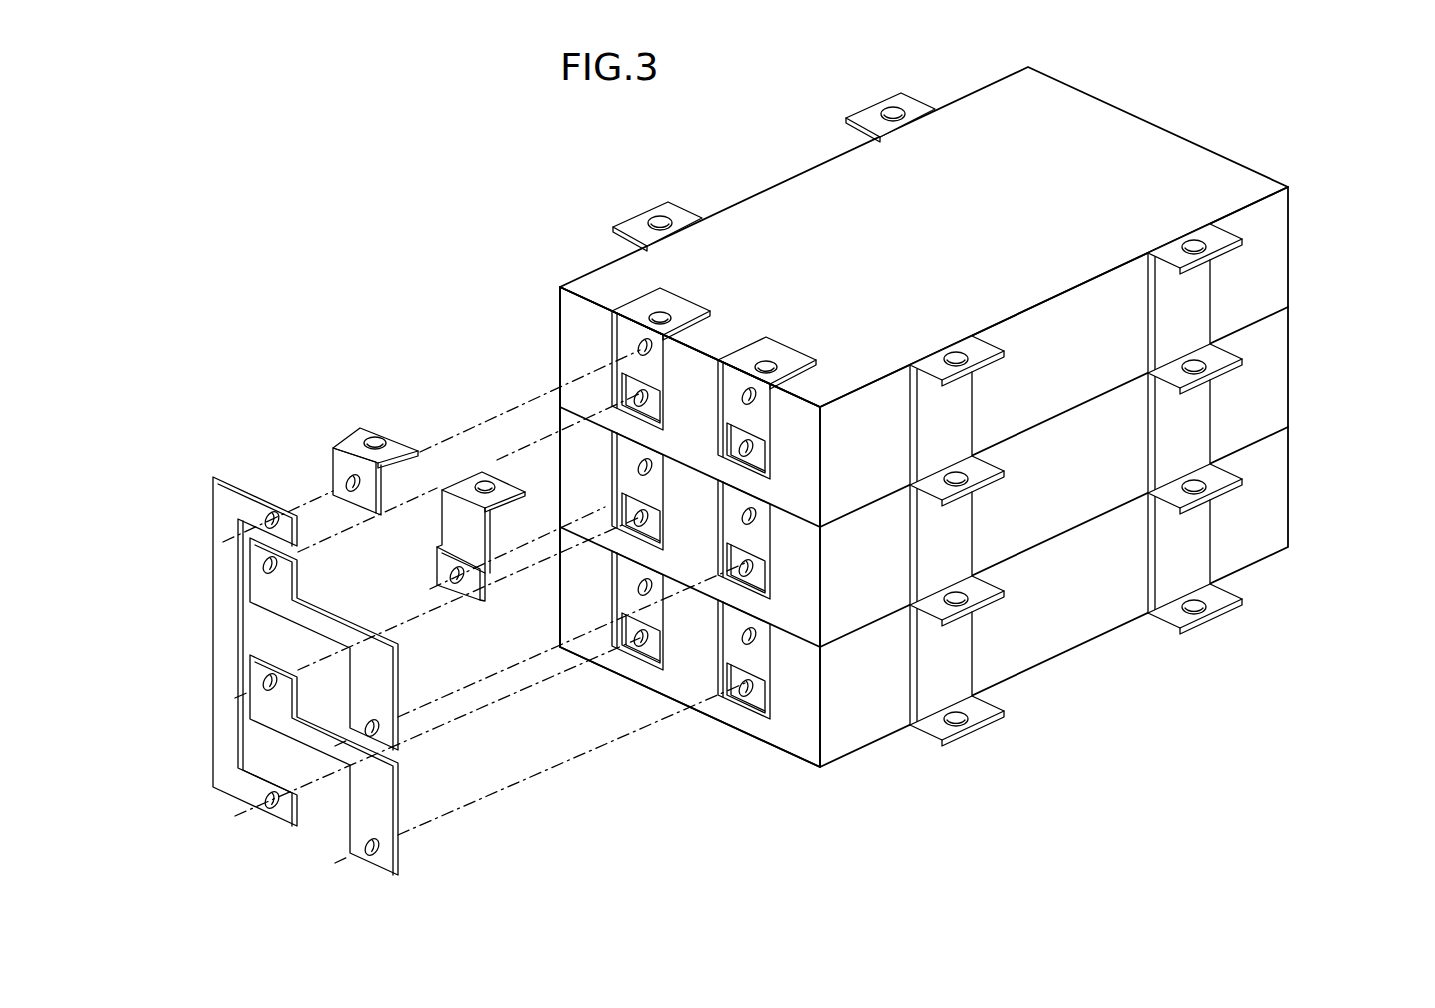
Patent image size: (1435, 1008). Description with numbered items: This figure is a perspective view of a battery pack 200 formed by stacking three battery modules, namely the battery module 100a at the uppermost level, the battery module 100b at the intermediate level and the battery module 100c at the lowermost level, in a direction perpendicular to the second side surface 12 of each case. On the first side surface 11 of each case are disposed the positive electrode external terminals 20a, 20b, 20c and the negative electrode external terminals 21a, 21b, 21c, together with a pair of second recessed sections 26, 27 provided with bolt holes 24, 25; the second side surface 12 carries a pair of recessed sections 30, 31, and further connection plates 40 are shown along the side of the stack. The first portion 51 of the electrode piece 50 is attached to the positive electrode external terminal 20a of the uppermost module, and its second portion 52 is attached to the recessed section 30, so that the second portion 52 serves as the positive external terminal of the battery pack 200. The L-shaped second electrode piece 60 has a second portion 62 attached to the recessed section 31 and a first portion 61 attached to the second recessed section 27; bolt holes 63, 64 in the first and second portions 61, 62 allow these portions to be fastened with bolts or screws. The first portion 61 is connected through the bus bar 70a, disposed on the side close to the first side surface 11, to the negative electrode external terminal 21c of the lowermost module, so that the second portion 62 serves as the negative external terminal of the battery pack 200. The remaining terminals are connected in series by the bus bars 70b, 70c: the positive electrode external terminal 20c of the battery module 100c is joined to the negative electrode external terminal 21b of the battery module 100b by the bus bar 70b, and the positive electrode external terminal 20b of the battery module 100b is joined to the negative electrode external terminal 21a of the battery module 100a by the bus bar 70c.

The battery pack 200 is at (944, 417).
The first side surface 11 is at (580, 350).
The second side surface 12 is at (605, 280).
The positive electrode external terminal 20a is at (771, 430).
The positive electrode external terminal 20b is at (757, 586).
The positive electrode external terminal 20c is at (757, 706).
The negative electrode external terminal 21a is at (667, 381).
The negative electrode external terminal 21b is at (652, 533).
The negative electrode external terminal 21c is at (652, 652).
The bolt hole 24 is at (757, 398).
The bolt hole 25 is at (650, 352).
The second recessed section 26 is at (755, 424).
The second recessed section 27 is at (652, 375).
The recessed section 30 is at (772, 350).
The recessed section 31 is at (675, 306).
The bus bar 40 is at (957, 655).
The electrode piece 50 is at (468, 527).
The first portion 51 is at (488, 536).
The second portion 52 is at (523, 500).
The second electrode piece 60 is at (358, 438).
The first portion 61 is at (378, 490).
The second portion 62 is at (420, 452).
The bolt hole 63 is at (345, 478).
The bolt hole 64 is at (372, 438).
The bus bar 70a is at (223, 568).
The bus bar 70b is at (400, 815).
The bus bar 70c is at (400, 692).
The battery module 100a is at (1292, 237).
The battery module 100b is at (1292, 367).
The battery module 100c is at (1292, 487).